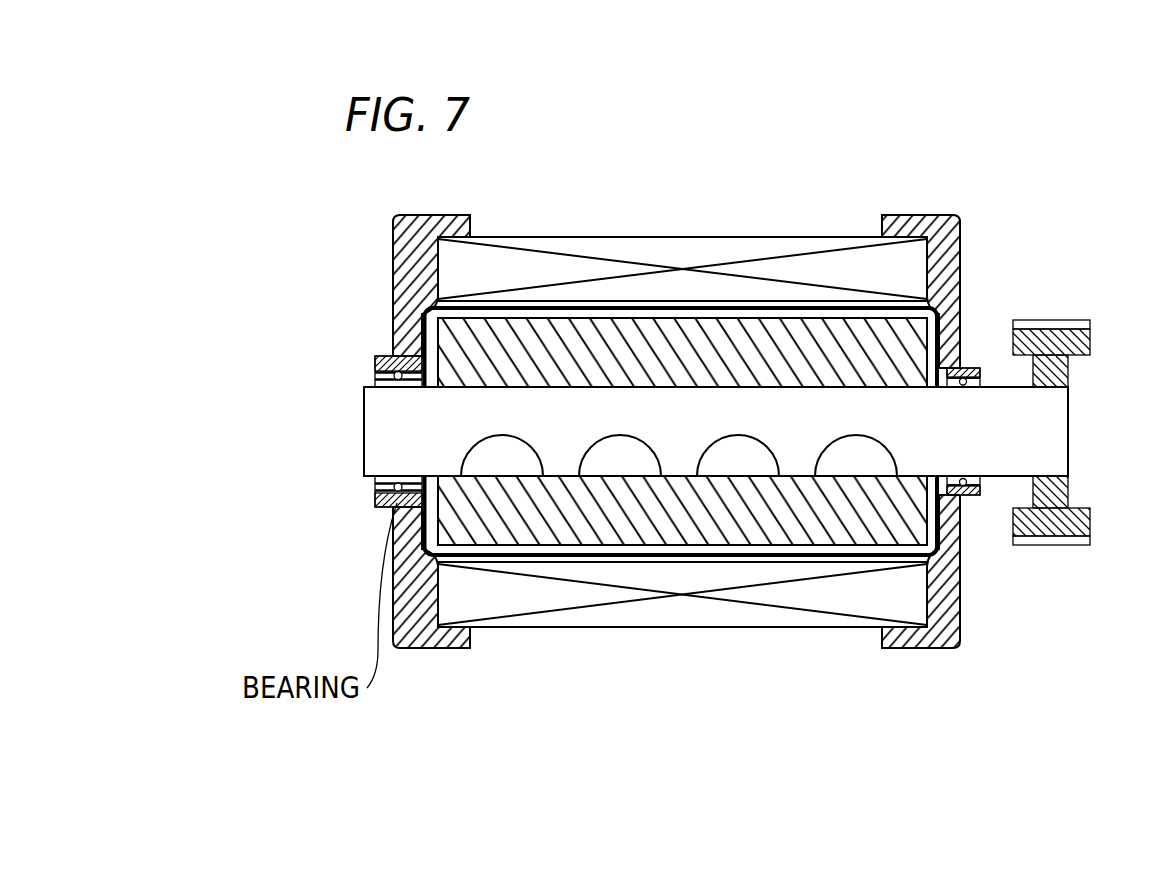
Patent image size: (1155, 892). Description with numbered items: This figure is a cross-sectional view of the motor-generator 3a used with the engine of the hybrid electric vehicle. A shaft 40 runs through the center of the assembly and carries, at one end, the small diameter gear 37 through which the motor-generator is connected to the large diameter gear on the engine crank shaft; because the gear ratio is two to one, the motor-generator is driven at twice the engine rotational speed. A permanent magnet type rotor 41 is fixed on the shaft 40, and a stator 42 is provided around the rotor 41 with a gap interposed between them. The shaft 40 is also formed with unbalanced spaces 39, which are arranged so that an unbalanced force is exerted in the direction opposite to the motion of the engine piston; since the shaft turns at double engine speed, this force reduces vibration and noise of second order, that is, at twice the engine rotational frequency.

The motor assembly 3a is at (840, 186).
The small diameter gear 37 is at (1090, 342).
The unbalanced spaces 39 is at (612, 460).
The shaft 40 is at (915, 443).
The permanent magnet type rotor 41 is at (892, 532).
The stator 42 is at (602, 237).